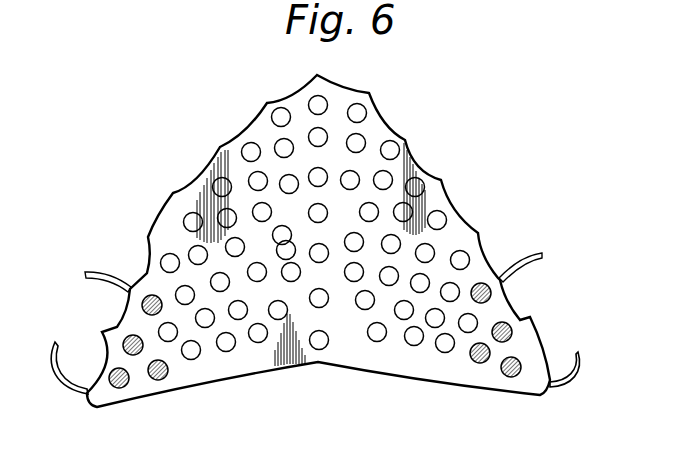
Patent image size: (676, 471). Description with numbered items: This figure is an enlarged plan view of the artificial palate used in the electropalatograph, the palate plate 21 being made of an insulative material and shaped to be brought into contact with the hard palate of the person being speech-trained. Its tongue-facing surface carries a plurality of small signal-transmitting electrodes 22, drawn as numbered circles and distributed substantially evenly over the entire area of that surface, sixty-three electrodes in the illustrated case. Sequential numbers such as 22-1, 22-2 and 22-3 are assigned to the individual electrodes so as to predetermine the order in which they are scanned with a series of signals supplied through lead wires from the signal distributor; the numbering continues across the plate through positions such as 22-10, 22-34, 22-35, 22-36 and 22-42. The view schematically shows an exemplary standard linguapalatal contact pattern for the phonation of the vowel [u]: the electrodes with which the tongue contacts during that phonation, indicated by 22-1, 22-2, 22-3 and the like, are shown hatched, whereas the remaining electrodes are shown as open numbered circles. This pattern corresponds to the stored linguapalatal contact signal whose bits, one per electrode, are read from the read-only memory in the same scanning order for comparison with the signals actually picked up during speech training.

The palatal plate (upper denture base) 21 is at (380, 130).
The electrode positions (numbered array of contact points) 22 is at (283, 177).
The signal-transmitting electrode (sequential number) 22-1 is at (121, 388).
The signal-transmitting electrode (sequential number) 22-2 is at (127, 337).
The signal-transmitting electrode (sequential number) 22-3 is at (152, 295).
The electrode position 10 22-10 is at (165, 378).
The electrode position 34 22-34 is at (518, 365).
The electrode position 35 22-35 is at (510, 328).
The electrode position 36 22-36 is at (484, 283).
The electrode position 42 22-42 is at (480, 362).